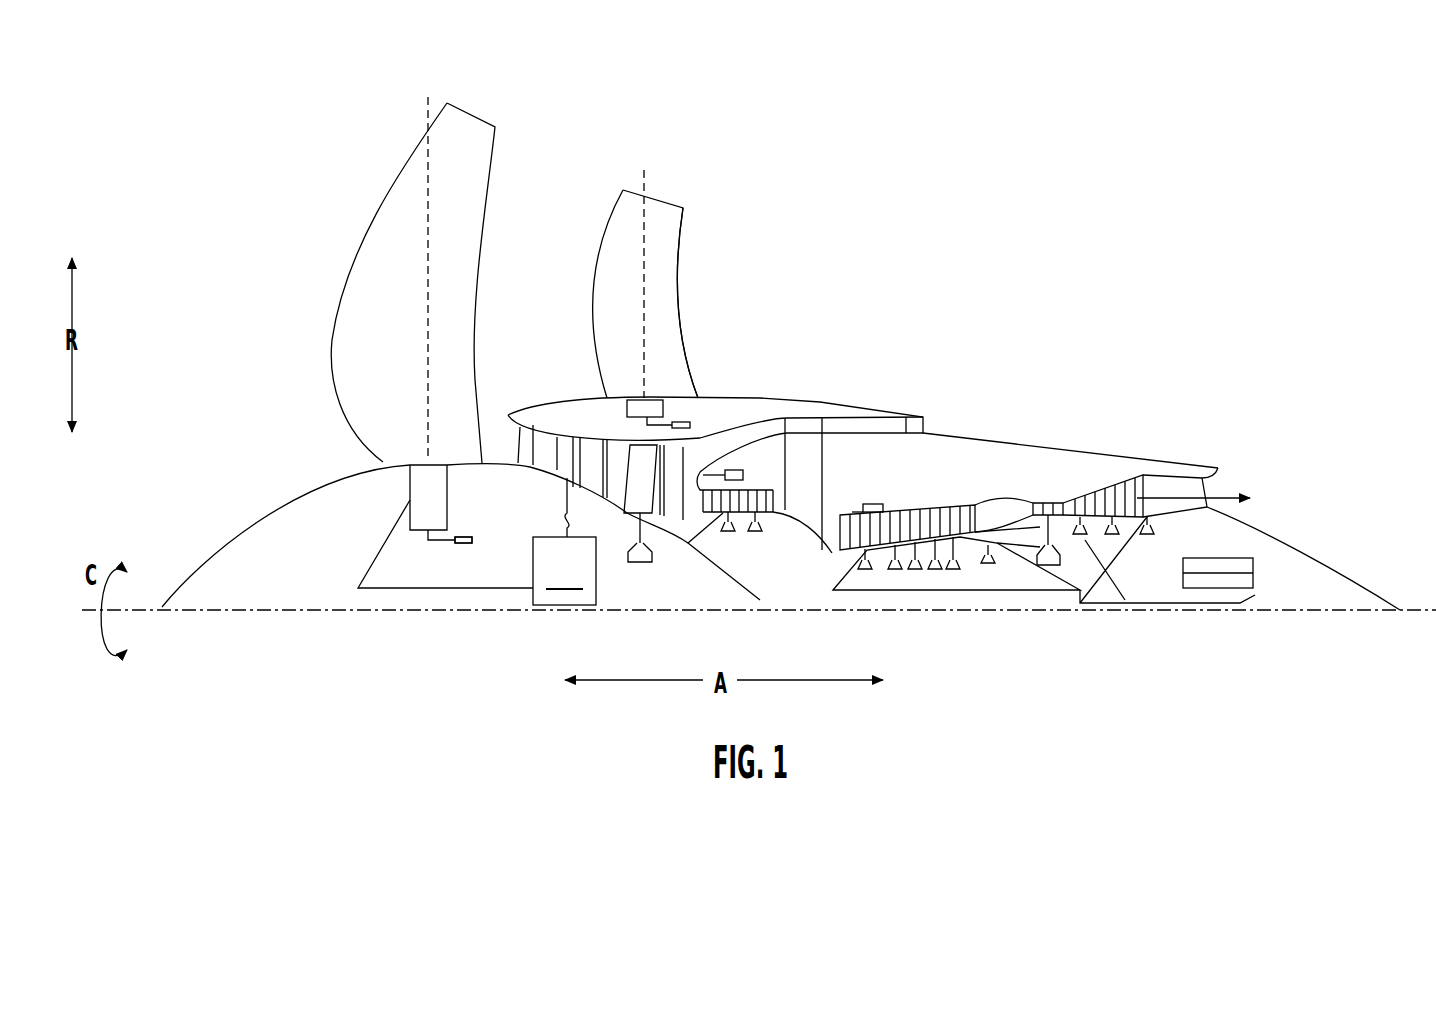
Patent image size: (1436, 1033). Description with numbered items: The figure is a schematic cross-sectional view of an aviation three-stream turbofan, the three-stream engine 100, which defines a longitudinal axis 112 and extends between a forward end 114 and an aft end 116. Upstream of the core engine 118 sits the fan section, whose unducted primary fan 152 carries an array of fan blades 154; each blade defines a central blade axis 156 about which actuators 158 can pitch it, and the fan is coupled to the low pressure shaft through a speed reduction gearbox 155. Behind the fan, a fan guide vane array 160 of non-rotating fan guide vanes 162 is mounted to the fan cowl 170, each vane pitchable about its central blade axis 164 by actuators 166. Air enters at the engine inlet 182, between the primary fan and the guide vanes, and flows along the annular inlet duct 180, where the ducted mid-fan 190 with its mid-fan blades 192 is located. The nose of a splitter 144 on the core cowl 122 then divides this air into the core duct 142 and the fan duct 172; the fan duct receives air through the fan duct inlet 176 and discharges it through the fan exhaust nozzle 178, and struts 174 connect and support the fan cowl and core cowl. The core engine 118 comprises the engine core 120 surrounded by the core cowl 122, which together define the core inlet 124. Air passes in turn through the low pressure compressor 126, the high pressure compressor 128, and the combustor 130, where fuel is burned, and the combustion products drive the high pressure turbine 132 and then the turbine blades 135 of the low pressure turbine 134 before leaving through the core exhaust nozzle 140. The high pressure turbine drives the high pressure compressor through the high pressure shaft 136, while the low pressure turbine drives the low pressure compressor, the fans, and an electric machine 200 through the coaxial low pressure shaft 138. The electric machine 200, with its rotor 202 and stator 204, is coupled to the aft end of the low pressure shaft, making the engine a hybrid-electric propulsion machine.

The three-stream engine 100 is at (995, 230).
The longitudinal axis 112 is at (263, 613).
The forward end 114 is at (160, 625).
The aft end 116 is at (1398, 615).
The core engine 118 is at (1005, 452).
The engine core 120 is at (1162, 584).
The core cowl 122 is at (1198, 462).
The core inlet 124 is at (700, 497).
The low pressure compressor 126 is at (768, 530).
The high pressure compressor 128 is at (899, 514).
The combustor 130 is at (987, 512).
The high pressure turbine 132 is at (1054, 491).
The low pressure turbine 134 is at (1126, 469).
The turbine blades 135 is at (1150, 480).
The high pressure shaft 136 is at (1003, 590).
The low pressure shaft 138 is at (1108, 590).
The core exhaust nozzle 140 is at (1220, 488).
The core duct 142 is at (839, 521).
The splitter 144 is at (722, 470).
The primary fan 152 is at (300, 283).
The fan blades 154 is at (377, 212).
The speed reduction gearbox 155 is at (564, 541).
The central blade axis 156 is at (427, 120).
The actuators 158 is at (463, 545).
The fan guide vane array 160 is at (575, 135).
The fan guide vanes 162 is at (660, 285).
The central blade axis 164 is at (642, 178).
The actuators 166 is at (703, 397).
The fan cowl 170 is at (857, 403).
The fan duct 172 is at (777, 420).
The struts 174 is at (808, 425).
The fan duct inlet 176 is at (693, 458).
The fan exhaust nozzle 178 is at (937, 410).
The inlet duct 180 is at (548, 440).
The engine inlet 182 is at (517, 450).
The mid-fan 190 is at (617, 470).
The mid-fan blades 192 is at (635, 487).
The electric machine 200 is at (1267, 567).
The rotor 202 is at (1255, 585).
The stator 204 is at (1213, 558).